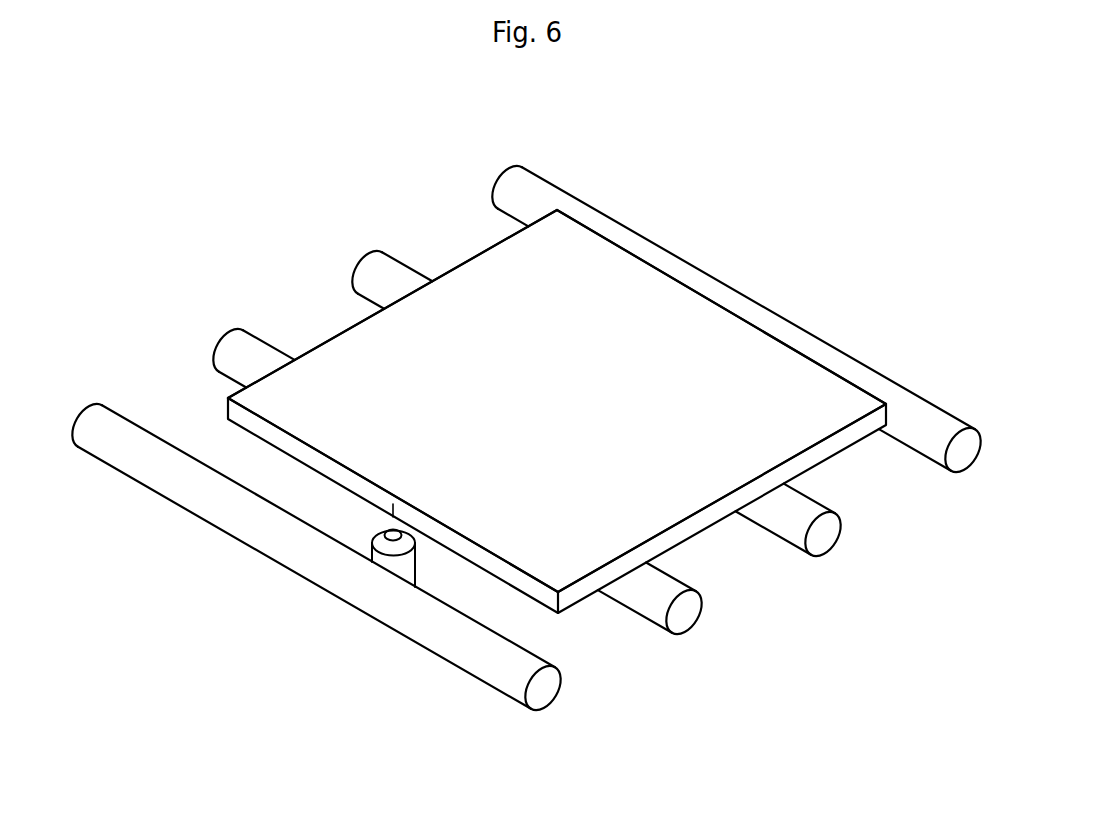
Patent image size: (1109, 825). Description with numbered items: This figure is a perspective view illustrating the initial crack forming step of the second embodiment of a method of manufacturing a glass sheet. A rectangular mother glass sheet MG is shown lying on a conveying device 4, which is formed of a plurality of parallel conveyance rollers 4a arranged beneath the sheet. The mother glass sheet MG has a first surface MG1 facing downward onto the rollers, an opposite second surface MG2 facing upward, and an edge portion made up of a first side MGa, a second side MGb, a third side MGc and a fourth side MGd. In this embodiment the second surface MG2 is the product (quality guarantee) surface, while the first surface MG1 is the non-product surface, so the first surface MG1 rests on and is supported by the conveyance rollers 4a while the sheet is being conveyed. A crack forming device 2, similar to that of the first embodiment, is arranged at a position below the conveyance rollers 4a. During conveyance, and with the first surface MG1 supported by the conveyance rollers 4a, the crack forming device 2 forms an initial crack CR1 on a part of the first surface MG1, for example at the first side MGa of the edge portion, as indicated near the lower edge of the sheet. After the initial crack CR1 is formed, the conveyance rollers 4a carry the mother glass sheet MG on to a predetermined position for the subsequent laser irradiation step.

The crack forming device 2 is at (402, 567).
The conveying device 4 is at (530, 412).
The conveyance roller 4a is at (932, 418).
The initial crack CR1 is at (392, 513).
The mother glass sheet MG is at (566, 415).
The first surface MG1 is at (452, 560).
The second surface MG2 is at (462, 520).
The first side MGa is at (297, 439).
The second side MGb is at (707, 512).
The third side MGc is at (665, 273).
The fourth side MGd is at (323, 341).